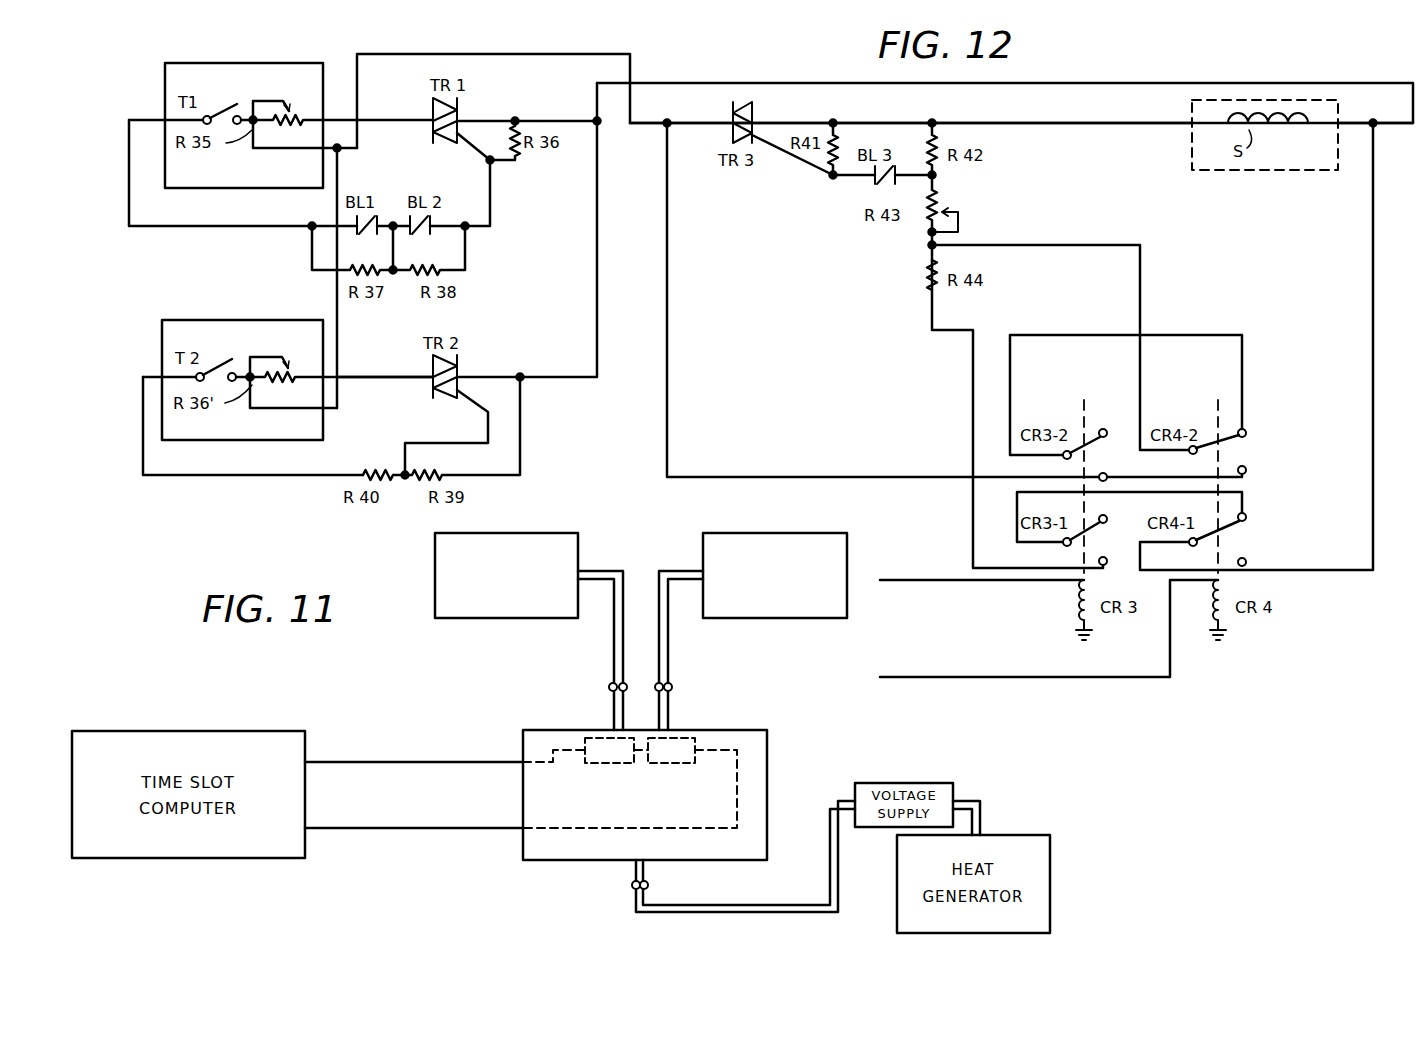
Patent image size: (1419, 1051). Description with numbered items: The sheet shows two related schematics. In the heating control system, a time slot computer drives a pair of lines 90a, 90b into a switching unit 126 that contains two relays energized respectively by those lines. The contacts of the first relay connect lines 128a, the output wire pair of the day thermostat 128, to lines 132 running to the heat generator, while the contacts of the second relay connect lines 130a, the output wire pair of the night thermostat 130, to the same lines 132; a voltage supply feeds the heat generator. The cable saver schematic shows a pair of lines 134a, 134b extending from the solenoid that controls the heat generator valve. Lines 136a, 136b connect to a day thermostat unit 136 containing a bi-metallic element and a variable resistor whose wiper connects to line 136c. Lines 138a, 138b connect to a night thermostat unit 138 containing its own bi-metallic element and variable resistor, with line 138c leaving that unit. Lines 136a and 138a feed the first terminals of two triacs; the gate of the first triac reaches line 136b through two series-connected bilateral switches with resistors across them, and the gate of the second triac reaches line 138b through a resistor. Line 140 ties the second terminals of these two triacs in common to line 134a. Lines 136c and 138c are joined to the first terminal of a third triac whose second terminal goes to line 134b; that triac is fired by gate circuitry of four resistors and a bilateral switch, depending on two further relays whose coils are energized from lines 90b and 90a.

In FIG. 12, the line 90a is at (960, 655).
In FIG. 11, the line 90a is at (353, 762).
In FIG. 12, the line 90b is at (945, 558).
In FIG. 11, the line 90b is at (366, 828).
In FIG. 11, the switching unit 126 is at (768, 755).
In FIG. 11, the day thermostat 128 is at (552, 533).
In FIG. 11, the lines 128a is at (613, 639).
In FIG. 11, the night thermostat 130 is at (759, 533).
In FIG. 11, the lines 130a is at (667, 638).
In FIG. 11, the lines 132 is at (705, 905).
In FIG. 12, the line 134a is at (1358, 126).
In FIG. 12, the line 134b is at (1055, 118).
In FIG. 12, the day thermostat unit 136 is at (235, 63).
In FIG. 12, the line 136a is at (334, 118).
In FIG. 12, the line 136b is at (140, 93).
In FIG. 12, the line 136c is at (303, 150).
In FIG. 12, the night thermostat unit 138 is at (222, 320).
In FIG. 12, the line 138a is at (374, 370).
In FIG. 12, the line 138b is at (142, 377).
In FIG. 12, the line 138c is at (340, 383).
In FIG. 12, the line 140 is at (700, 82).